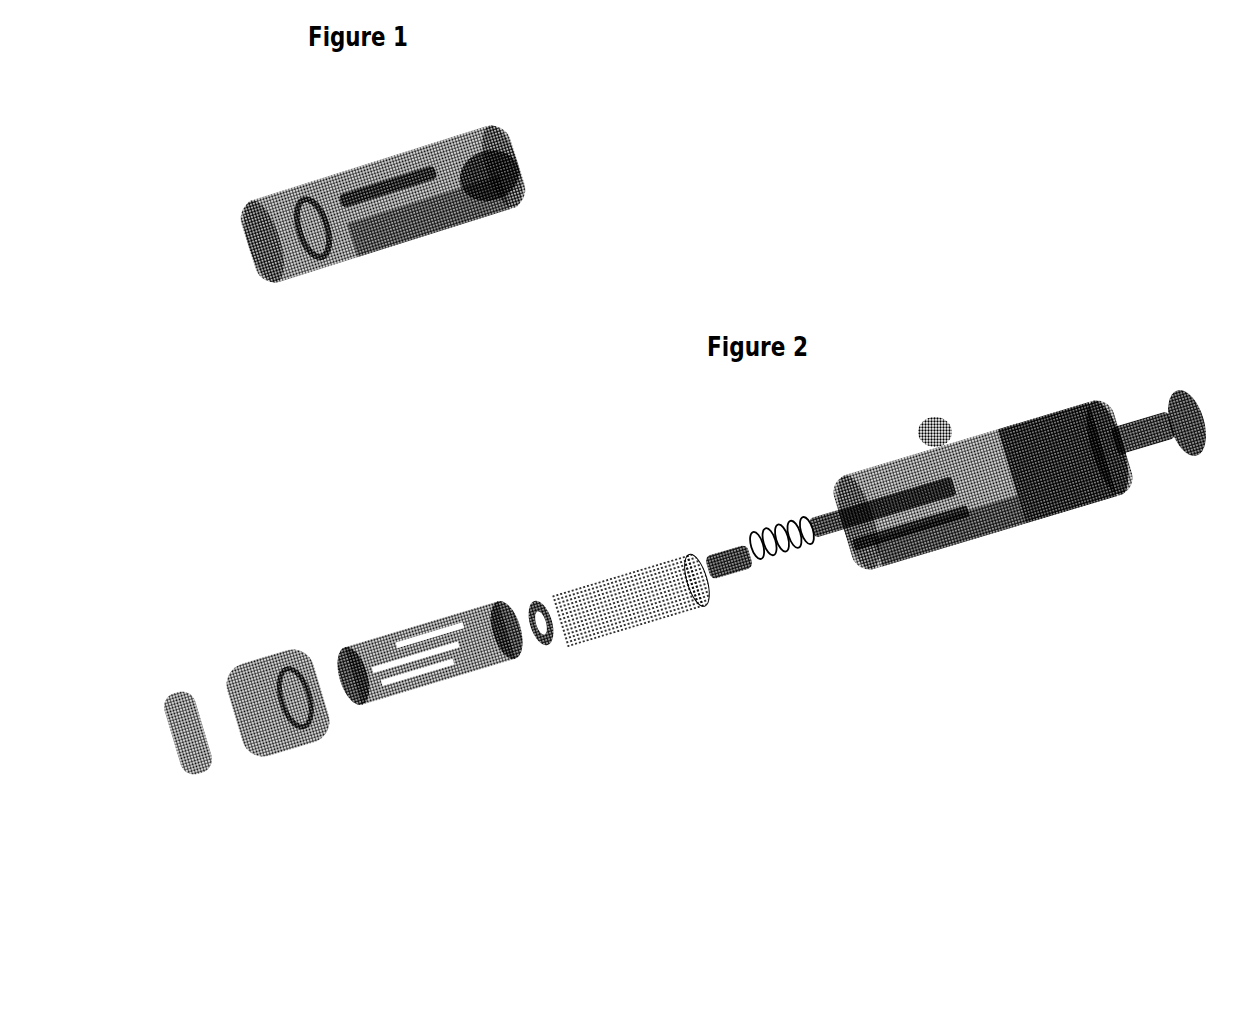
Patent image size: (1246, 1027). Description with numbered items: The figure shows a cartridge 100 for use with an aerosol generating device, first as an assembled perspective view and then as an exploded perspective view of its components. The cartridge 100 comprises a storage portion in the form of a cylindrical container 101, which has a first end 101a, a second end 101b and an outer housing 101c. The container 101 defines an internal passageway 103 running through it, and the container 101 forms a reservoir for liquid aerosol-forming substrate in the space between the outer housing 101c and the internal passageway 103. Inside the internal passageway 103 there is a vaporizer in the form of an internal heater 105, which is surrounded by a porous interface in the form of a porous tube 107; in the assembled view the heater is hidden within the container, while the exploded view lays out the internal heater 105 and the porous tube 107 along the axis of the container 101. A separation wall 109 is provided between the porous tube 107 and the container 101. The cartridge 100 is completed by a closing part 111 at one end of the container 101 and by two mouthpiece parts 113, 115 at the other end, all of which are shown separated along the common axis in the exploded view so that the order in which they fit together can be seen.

In FIG. 1, the cartridge 100 is at (212, 282).
In FIG. 2, the cartridge 100 is at (510, 566).
In FIG. 2, the cylindrical container 101 is at (950, 403).
In FIG. 1, the first end 101a is at (553, 140).
In FIG. 2, the first end 101a is at (1138, 393).
In FIG. 1, the second end 101b is at (218, 237).
In FIG. 2, the second end 101b is at (808, 483).
In FIG. 1, the outer housing 101c is at (527, 177).
In FIG. 2, the outer housing 101c is at (935, 542).
In FIG. 2, the internal passageway 103 is at (855, 550).
In FIG. 2, the internal heater 105 is at (725, 578).
In FIG. 1, the porous tube 107 is at (357, 195).
In FIG. 2, the porous tube 107 is at (570, 634).
In FIG. 1, the separation wall 109 is at (430, 200).
In FIG. 2, the separation wall 109 is at (403, 686).
In FIG. 2, the closing part 111 is at (1148, 437).
In FIG. 2, the mouthpiece part 113 is at (297, 745).
In FIG. 2, the mouthpiece part 115 is at (195, 763).